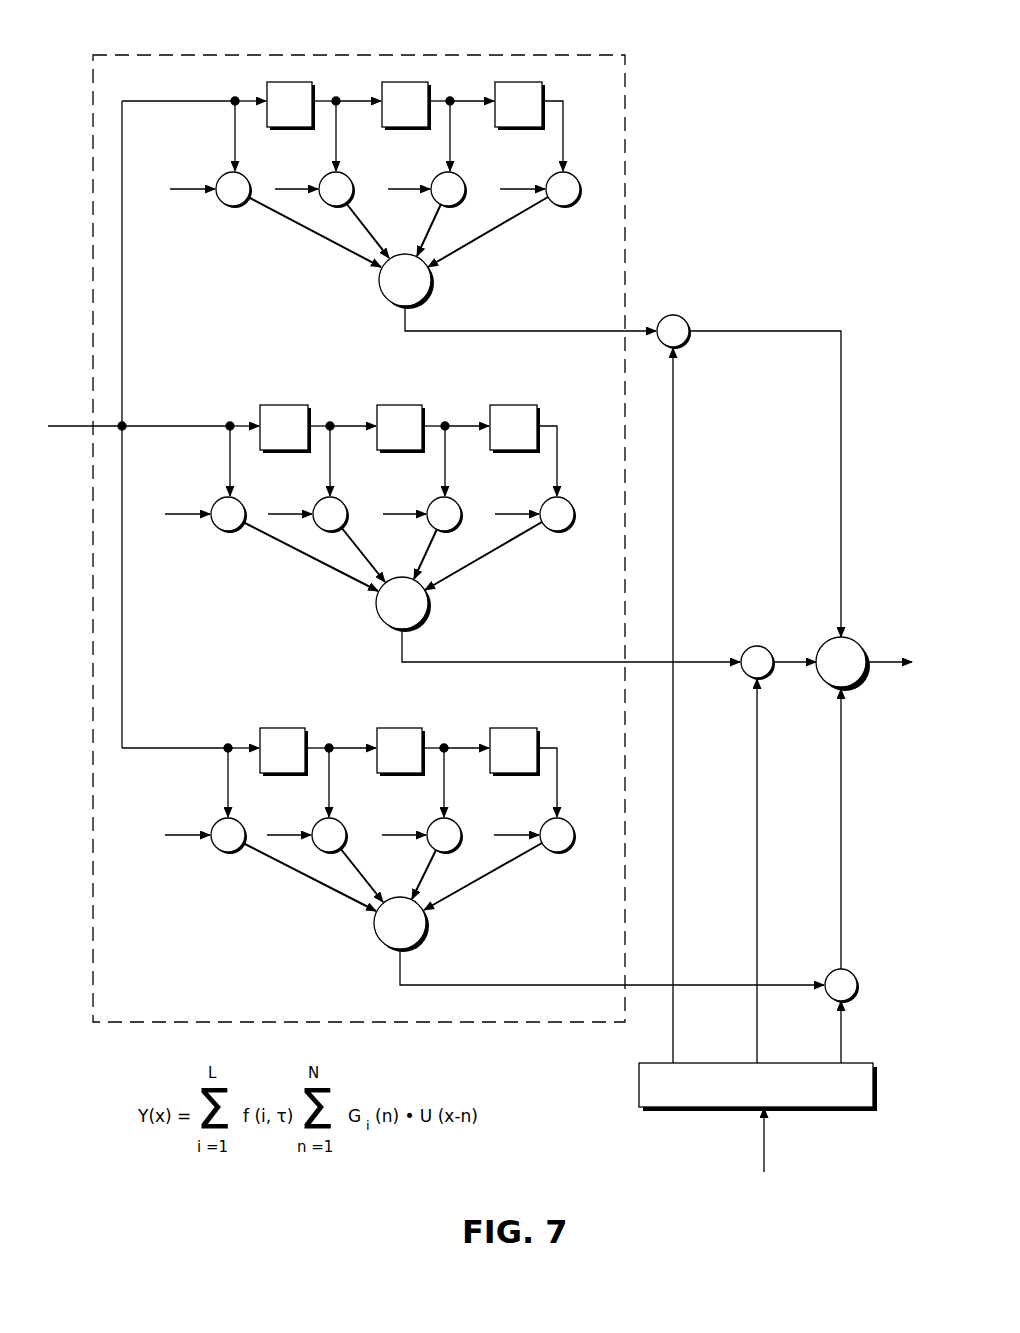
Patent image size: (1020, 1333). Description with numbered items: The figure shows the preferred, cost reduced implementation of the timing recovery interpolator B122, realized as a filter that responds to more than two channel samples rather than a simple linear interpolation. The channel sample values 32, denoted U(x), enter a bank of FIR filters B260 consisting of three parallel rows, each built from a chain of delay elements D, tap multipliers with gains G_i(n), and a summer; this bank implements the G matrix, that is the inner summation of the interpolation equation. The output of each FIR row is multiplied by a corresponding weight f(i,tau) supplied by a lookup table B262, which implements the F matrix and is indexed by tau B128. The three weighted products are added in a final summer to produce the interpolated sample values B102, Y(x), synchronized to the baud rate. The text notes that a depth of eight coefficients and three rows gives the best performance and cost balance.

The interpolator B122 is at (740, 168).
The bank of FIR filters B260 is at (382, 55).
The channel sample values 32 is at (66, 460).
The interpolated sample values B102 is at (884, 668).
The lookup table B262 is at (655, 1110).
The tau B128 is at (765, 1148).